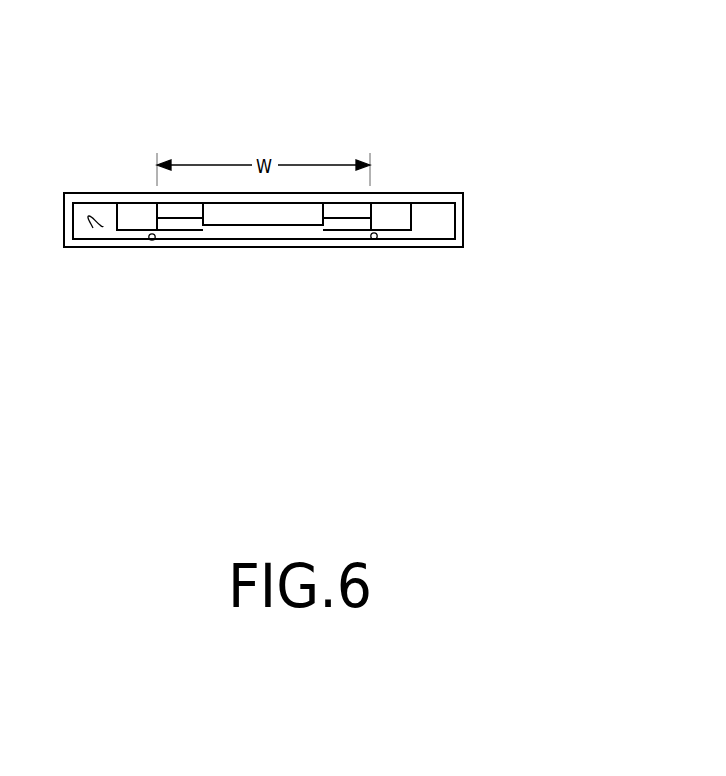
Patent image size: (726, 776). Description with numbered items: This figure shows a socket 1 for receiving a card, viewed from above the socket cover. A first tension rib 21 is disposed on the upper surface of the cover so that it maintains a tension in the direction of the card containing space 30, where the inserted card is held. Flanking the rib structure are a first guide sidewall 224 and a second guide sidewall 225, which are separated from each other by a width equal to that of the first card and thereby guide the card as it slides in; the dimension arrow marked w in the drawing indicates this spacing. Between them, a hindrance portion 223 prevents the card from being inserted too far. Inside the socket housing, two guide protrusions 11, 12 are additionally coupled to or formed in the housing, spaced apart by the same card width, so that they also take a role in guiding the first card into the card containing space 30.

The socket 1 is at (485, 85).
The guide protrusion 11 is at (155, 240).
The guide protrusion 12 is at (377, 240).
The first tension rib 21 is at (245, 215).
The hindrance portion 223 is at (332, 224).
The first guide sidewall 224 is at (138, 212).
The second guide sidewall 225 is at (395, 215).
The card containing space 30 is at (93, 228).